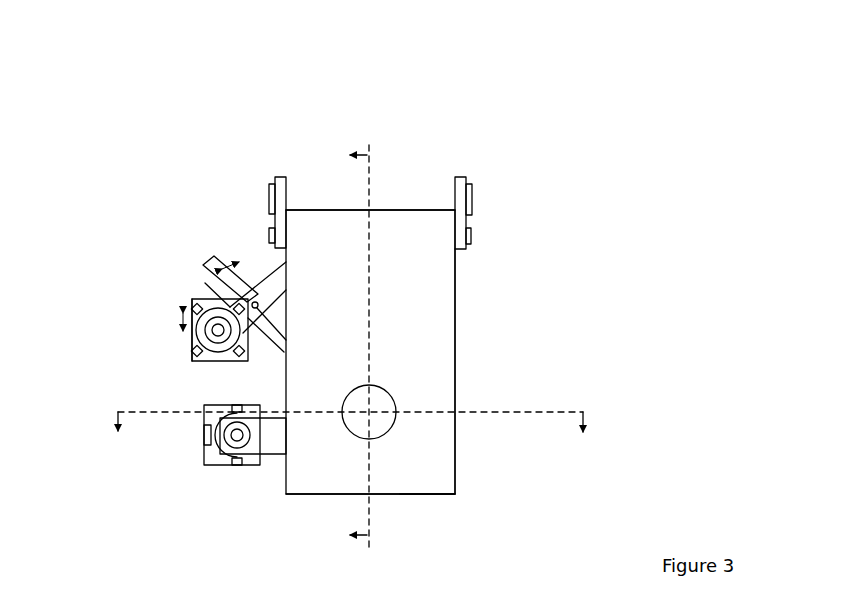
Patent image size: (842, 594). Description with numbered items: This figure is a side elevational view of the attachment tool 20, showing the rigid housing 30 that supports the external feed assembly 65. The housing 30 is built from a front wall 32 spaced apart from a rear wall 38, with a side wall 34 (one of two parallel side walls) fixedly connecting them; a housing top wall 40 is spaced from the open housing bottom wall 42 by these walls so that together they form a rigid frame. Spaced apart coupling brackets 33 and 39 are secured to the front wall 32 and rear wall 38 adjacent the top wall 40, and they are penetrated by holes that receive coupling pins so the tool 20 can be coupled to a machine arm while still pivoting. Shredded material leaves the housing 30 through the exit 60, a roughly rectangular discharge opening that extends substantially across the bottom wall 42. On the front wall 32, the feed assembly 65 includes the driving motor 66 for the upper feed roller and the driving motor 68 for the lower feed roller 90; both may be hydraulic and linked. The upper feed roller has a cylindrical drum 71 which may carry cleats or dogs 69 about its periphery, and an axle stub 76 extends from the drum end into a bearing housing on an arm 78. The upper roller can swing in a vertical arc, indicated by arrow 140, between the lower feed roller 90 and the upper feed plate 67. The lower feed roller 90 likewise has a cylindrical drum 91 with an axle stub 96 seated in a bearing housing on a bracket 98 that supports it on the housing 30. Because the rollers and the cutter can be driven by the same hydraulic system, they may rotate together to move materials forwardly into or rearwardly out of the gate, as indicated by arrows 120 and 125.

The attachment tool 20 is at (176, 126).
The rigid housing 30 is at (488, 295).
The front wall 32 is at (284, 262).
The coupling bracket 33 is at (276, 178).
The side wall 34 is at (445, 348).
The rear wall 38 is at (456, 275).
The coupling bracket 39 is at (458, 190).
The housing top wall 40 is at (415, 210).
The housing bottom wall 42 is at (410, 494).
The exit 60 is at (467, 486).
The feed assembly 65 is at (124, 351).
The driving motor 66 is at (192, 300).
The upper feed plate 67 is at (205, 283).
The driving motor 68 is at (207, 457).
The cleats or dogs 69 is at (180, 311).
The cylindrical drum 71 is at (218, 333).
The axle stub 76 is at (222, 353).
The arm 78 is at (258, 310).
The lower feed roller 90 is at (228, 483).
The cylindrical drum 91 is at (216, 440).
The axle stub 96 is at (240, 440).
The bracket 98 is at (268, 447).
The arrow 120 is at (180, 326).
The arrow 125 is at (194, 426).
The arrow 140 is at (205, 268).